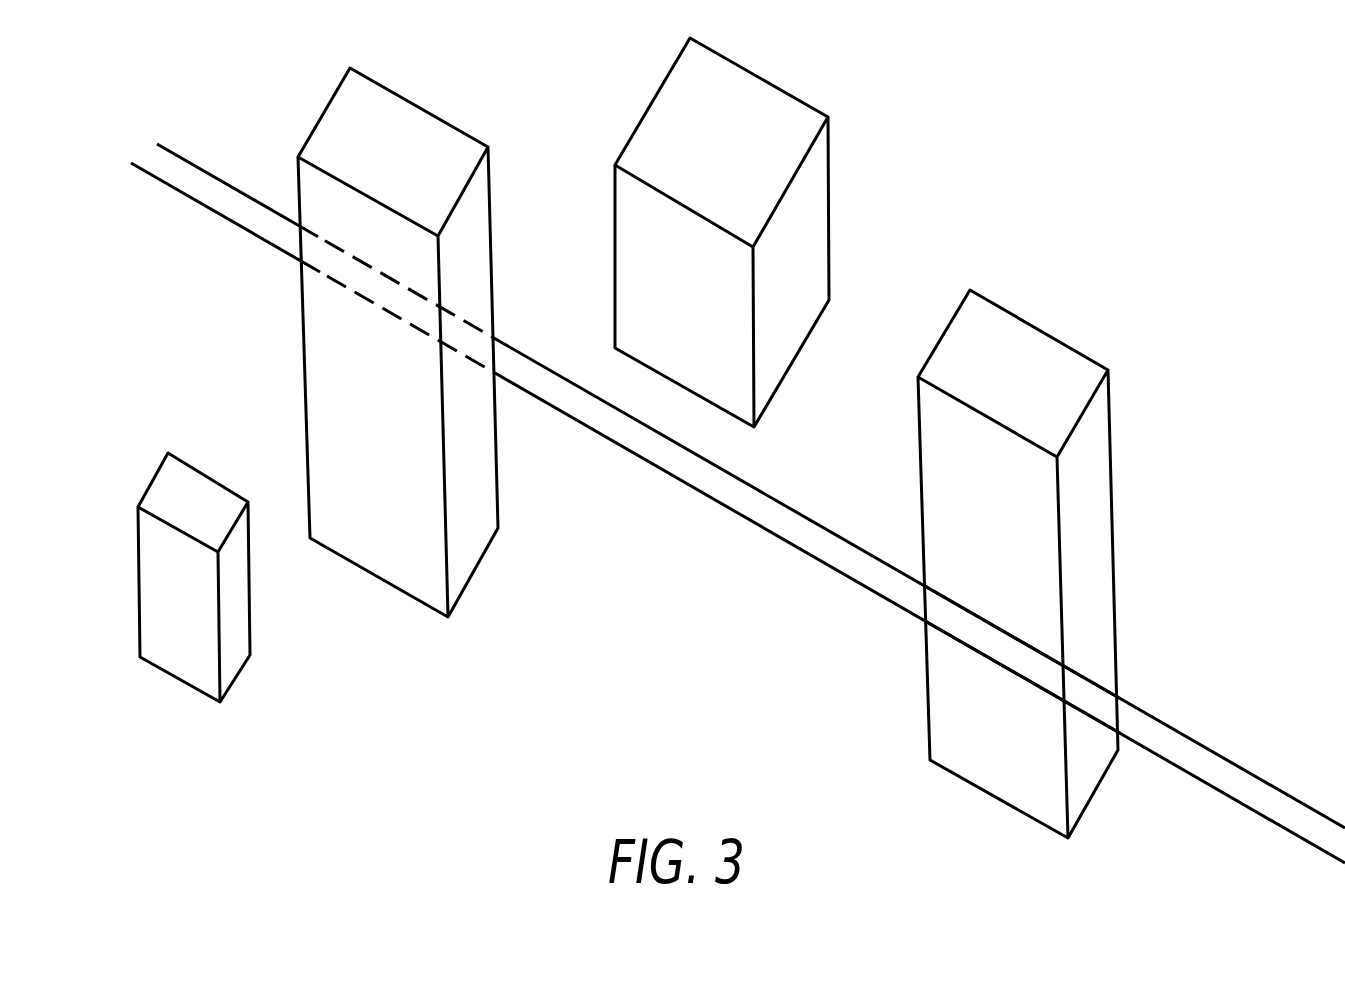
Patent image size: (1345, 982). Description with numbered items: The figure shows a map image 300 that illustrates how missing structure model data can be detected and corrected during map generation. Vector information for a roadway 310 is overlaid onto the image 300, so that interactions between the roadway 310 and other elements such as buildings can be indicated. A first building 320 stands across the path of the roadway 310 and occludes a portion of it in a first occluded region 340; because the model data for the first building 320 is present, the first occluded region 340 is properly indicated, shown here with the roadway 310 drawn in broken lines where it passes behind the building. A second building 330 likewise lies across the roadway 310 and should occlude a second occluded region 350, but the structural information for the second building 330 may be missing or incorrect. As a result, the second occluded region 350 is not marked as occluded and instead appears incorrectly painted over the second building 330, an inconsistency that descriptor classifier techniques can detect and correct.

The map image 300 is at (212, 56).
The roadway 310 is at (715, 503).
The first building 320 is at (407, 100).
The second building 330 is at (1042, 330).
The first occluded region 340 is at (347, 283).
The second occluded region 350 is at (993, 660).